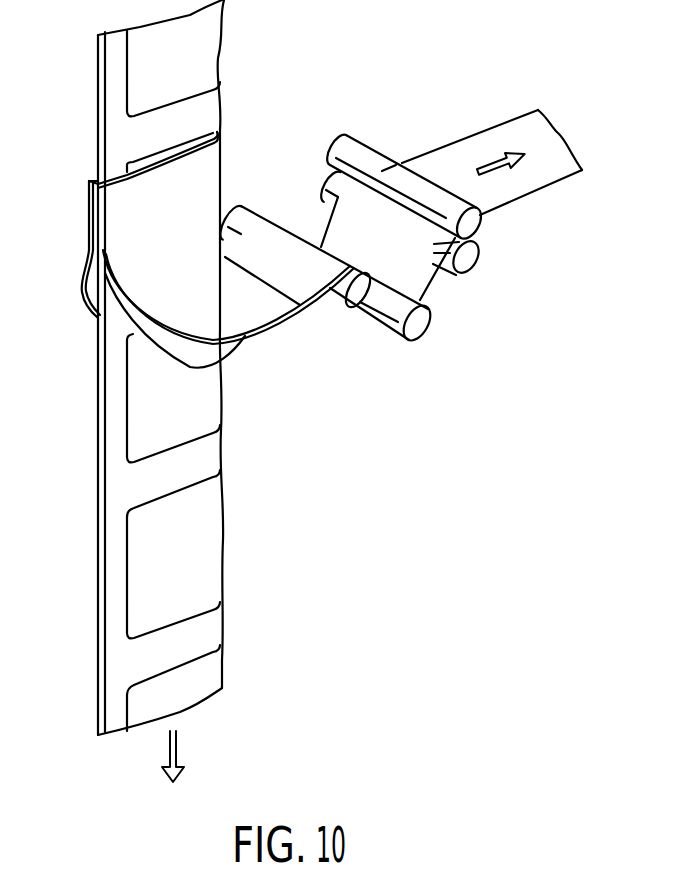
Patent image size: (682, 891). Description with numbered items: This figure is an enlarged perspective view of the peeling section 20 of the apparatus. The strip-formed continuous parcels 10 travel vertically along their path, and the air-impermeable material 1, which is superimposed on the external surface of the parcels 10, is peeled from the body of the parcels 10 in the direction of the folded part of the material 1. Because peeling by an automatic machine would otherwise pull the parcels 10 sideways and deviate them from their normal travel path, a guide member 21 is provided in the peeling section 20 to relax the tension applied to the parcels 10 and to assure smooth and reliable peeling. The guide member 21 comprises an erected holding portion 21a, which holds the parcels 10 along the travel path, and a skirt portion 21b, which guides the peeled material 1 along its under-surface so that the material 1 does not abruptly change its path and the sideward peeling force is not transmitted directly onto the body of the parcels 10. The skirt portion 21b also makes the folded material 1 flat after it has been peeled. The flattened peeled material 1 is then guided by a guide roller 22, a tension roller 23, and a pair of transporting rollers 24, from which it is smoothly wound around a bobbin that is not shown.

The air-impermeable material 1 is at (480, 143).
The strip-formed continuous parcels 10 is at (215, 56).
The peeling section 20 is at (368, 211).
The guide member 21 is at (195, 228).
The erected holding portion 21a is at (222, 158).
The skirt portion 21b is at (240, 277).
The guide roller 22 is at (353, 302).
The tension roller 23 is at (421, 328).
The pair of transporting rollers 24 is at (469, 261).